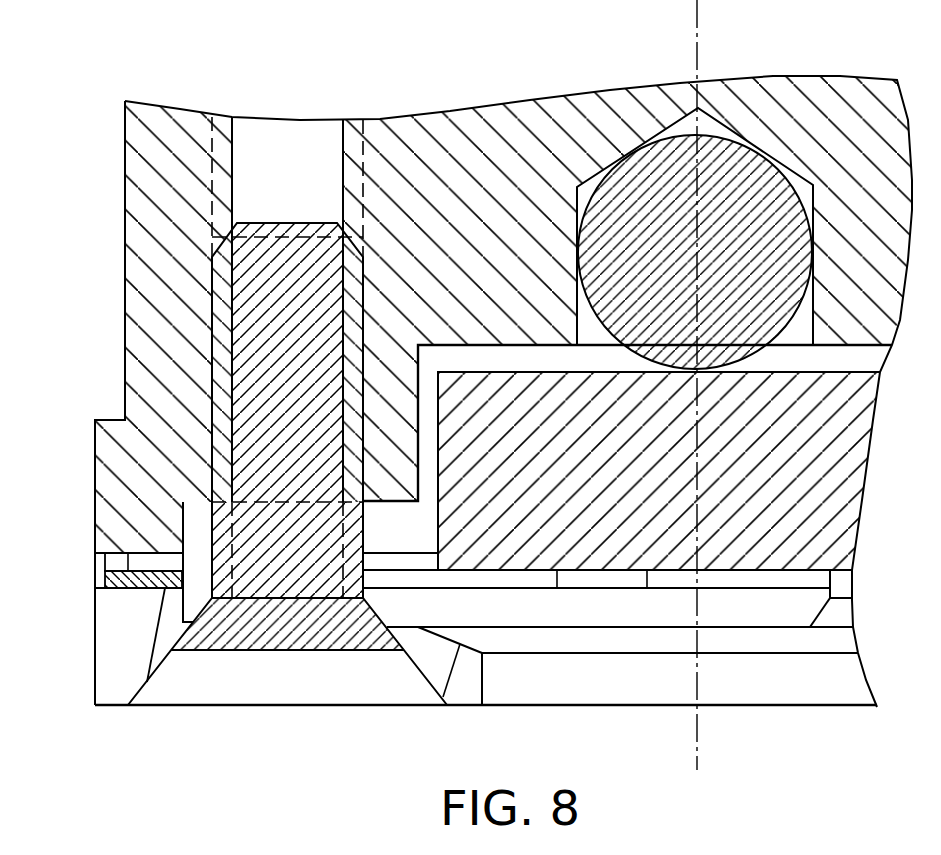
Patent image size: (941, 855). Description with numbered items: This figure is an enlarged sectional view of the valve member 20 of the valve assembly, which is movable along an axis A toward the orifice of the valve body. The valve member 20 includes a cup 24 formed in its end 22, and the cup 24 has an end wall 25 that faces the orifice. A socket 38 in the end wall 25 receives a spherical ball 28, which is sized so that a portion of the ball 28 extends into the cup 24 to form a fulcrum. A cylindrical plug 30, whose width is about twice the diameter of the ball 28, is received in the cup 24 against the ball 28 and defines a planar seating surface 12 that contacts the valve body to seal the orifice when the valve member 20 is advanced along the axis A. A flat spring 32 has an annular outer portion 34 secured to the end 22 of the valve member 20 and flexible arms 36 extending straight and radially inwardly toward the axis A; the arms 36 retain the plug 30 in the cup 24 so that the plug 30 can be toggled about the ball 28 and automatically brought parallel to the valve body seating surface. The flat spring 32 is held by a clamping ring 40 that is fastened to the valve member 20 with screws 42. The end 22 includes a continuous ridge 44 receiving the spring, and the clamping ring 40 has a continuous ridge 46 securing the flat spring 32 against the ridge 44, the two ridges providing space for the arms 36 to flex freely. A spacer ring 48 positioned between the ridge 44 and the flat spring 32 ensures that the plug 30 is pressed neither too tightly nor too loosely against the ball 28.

The seating surface 12 is at (740, 572).
The valve member 20 is at (530, 135).
The end 22 is at (383, 503).
The cup 24 is at (468, 340).
The end wall 25 is at (540, 310).
The spherical ball 28 is at (743, 168).
The plug 30 is at (834, 511).
The flat spring 32 is at (137, 595).
The outer portion 34 is at (103, 580).
The flexible arms 36 is at (600, 582).
The socket 38 is at (667, 120).
The clamping ring 40 is at (115, 708).
The screws 42 is at (262, 650).
The continuous ridge 44 is at (107, 532).
The continuous ridge 46 is at (95, 622).
The spacer ring 48 is at (103, 567).
The axis A is at (699, 49).